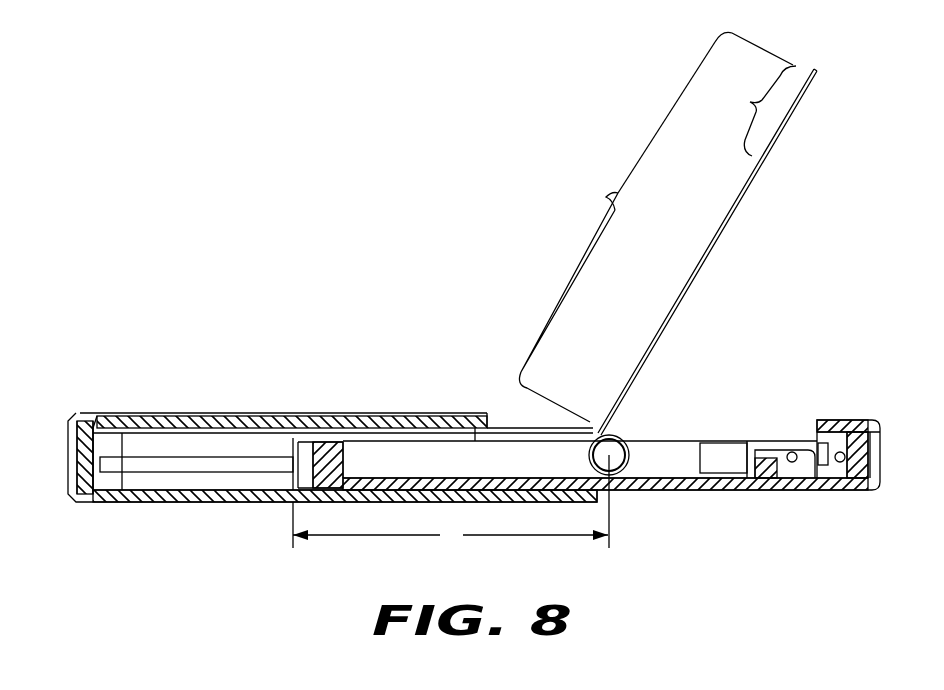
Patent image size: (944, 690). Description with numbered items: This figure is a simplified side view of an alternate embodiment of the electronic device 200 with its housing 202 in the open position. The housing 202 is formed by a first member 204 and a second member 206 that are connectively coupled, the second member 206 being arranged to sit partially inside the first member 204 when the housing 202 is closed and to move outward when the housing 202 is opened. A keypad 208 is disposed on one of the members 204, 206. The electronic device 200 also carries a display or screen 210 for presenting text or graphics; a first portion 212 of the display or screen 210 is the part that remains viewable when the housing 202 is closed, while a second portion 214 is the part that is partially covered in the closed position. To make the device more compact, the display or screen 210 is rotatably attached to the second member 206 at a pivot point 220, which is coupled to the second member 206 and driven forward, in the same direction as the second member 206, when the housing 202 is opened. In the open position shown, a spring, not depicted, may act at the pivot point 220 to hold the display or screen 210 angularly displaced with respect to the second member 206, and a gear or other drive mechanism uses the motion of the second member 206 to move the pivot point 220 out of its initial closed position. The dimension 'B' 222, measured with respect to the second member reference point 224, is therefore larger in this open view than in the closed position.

The electronic device 200 is at (441, 218).
The housing 202 is at (458, 413).
The first member 204 is at (93, 418).
The second member 206 is at (878, 490).
The keypad 208 is at (267, 413).
The display or screen 210 is at (811, 82).
The first portion 212 is at (753, 111).
The second portion 214 is at (590, 196).
The pivot point 220 is at (688, 478).
The dimension 'B' 222 is at (500, 537).
The reference point 224 is at (293, 542).